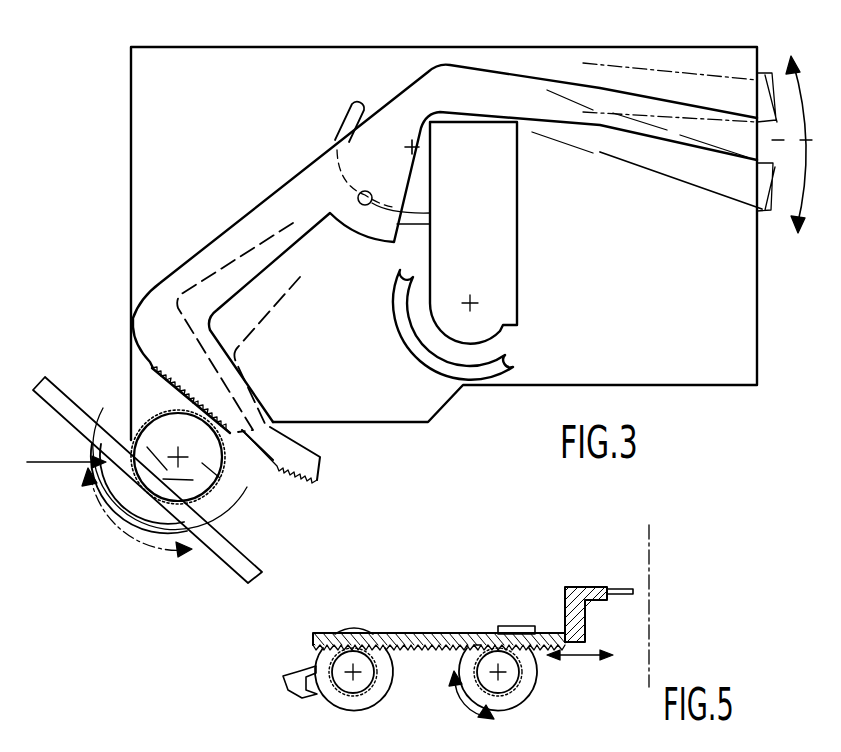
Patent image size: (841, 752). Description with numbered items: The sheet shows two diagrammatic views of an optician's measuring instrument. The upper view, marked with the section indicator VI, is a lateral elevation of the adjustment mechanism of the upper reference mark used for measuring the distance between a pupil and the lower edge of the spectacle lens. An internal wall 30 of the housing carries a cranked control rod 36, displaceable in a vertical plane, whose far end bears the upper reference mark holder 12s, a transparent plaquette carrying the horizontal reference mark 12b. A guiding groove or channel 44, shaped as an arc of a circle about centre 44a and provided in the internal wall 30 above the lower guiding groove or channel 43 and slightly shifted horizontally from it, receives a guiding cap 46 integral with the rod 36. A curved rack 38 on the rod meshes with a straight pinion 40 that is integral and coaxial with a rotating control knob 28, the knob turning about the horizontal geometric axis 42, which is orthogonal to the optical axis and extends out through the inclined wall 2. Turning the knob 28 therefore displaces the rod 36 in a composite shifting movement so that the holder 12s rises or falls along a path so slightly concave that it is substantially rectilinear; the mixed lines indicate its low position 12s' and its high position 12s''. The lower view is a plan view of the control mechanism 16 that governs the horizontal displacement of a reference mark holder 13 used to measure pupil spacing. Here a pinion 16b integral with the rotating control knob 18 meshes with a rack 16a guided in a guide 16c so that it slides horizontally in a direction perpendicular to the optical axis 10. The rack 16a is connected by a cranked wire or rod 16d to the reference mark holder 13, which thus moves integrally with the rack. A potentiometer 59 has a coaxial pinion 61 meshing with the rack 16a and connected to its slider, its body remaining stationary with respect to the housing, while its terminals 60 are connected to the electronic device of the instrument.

In FIG. 3, the section view indicator VI is at (70, 487).
In FIG. 3, the internal wall 30 is at (247, 60).
In FIG. 3, the cranked control rod 36 is at (525, 84).
In FIG. 3, the upper reference mark holder 12s is at (672, 144).
In FIG. 3, the upper reference mark 12b is at (758, 158).
In FIG. 3, the centre of guiding groove 44a is at (412, 147).
In FIG. 3, the guiding groove or channel 44 is at (347, 115).
In FIG. 3, the guiding cap 46 is at (370, 196).
In FIG. 3, the low position of upper reference mark holder 12s' is at (222, 309).
In FIG. 3, the high position of upper reference mark holder 12s'' is at (277, 352).
In FIG. 3, the guiding groove or channel 43 is at (413, 345).
In FIG. 3, the horizontal geometric axis 42 is at (172, 445).
In FIG. 3, the curved rack 38 is at (253, 463).
In FIG. 3, the straight pinion 40 is at (213, 477).
In FIG. 3, the rotating control knob 28 is at (123, 425).
In FIG. 3, the inclined wall 2 is at (222, 557).
In FIG. 5, the control mechanism 16 is at (551, 600).
In FIG. 5, the rack 16a is at (493, 633).
In FIG. 5, the pinion 16b is at (477, 657).
In FIG. 5, the guide 16c is at (517, 627).
In FIG. 5, the cranked wire or rod 16d is at (578, 623).
In FIG. 5, the reference mark holder 13 is at (634, 590).
In FIG. 5, the optical axis 10 is at (650, 660).
In FIG. 5, the rotating control knob 18 is at (533, 677).
In FIG. 5, the coaxial pinion 61 is at (372, 680).
In FIG. 5, the potentiometer 59 is at (336, 711).
In FIG. 5, the terminals 60 is at (290, 676).